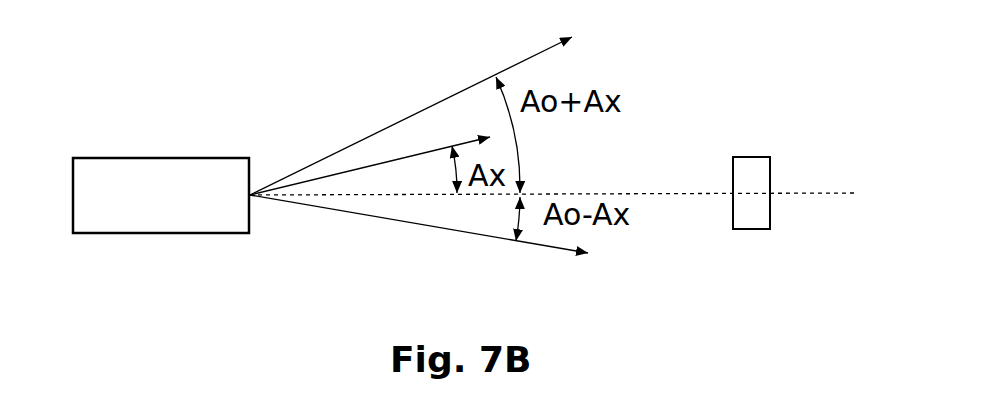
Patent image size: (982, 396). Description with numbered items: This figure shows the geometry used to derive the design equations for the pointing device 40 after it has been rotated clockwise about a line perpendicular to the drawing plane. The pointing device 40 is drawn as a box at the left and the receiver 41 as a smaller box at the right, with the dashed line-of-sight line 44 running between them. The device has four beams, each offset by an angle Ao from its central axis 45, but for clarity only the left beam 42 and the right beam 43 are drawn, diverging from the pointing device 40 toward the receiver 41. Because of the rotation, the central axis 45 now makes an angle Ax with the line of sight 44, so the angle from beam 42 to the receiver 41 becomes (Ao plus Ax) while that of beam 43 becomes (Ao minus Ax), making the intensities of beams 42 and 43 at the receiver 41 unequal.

The pointing device 40 is at (167, 234).
The receiver 41 is at (760, 234).
The left beam 42 is at (433, 108).
The right beam 43 is at (440, 235).
The line-of-sight line 44 is at (573, 196).
The central axis 45 is at (377, 151).